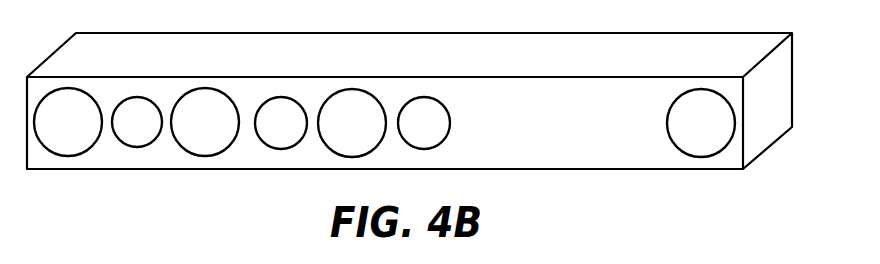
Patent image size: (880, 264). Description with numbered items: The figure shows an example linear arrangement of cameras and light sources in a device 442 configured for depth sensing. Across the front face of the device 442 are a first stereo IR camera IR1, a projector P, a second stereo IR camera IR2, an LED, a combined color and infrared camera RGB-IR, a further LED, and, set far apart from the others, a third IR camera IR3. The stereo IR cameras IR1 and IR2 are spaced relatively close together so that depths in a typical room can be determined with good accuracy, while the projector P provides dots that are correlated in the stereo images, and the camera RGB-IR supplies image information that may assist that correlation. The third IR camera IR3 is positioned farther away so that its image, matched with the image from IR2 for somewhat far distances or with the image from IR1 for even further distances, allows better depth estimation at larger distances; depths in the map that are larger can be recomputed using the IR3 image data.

The device 442 is at (757, 136).
The stereo IR camera IR1 is at (68, 122).
The projector P is at (137, 122).
The stereo IR camera IR2 is at (205, 122).
The element LED is at (352, 123).
The RGB/IR camera RGB-IR is at (352, 123).
The third IR camera IR3 is at (701, 123).